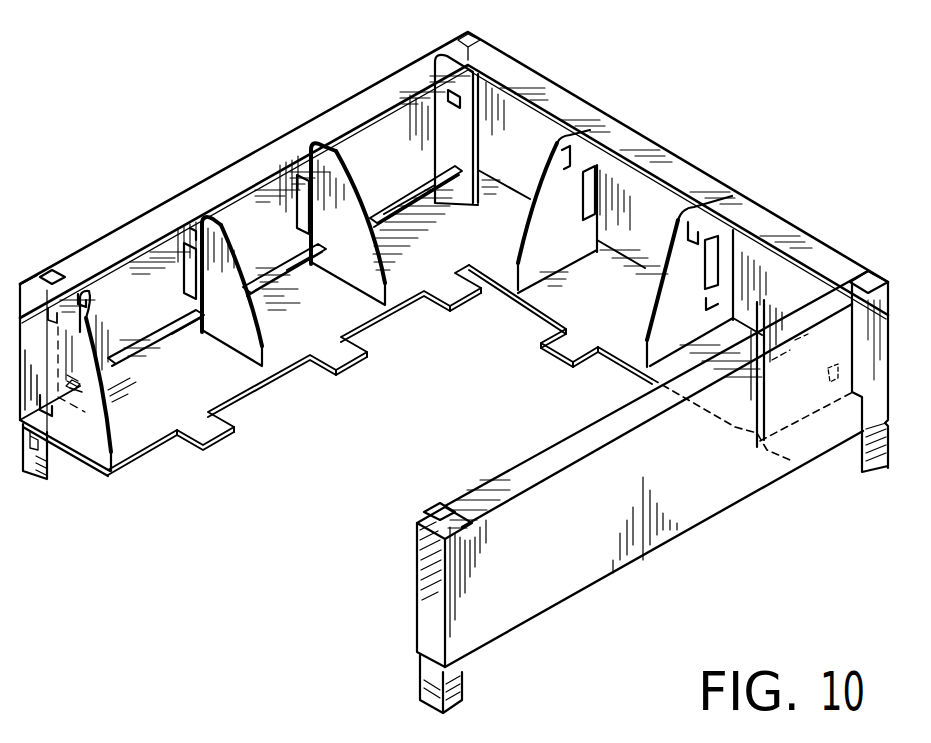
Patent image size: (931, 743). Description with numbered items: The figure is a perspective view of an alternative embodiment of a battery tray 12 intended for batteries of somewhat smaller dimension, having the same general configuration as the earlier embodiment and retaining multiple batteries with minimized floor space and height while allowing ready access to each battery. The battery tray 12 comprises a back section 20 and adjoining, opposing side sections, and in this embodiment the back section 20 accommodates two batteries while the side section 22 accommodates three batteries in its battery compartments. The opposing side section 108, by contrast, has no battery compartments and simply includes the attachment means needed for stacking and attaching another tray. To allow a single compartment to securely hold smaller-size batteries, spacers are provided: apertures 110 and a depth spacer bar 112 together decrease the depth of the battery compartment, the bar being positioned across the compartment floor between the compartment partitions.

The battery tray 12 is at (760, 206).
The back section 20 is at (584, 377).
The side section 22 is at (380, 362).
The opposing side section 108 is at (416, 582).
The apertures 110 is at (200, 328).
The depth spacer bar 112 is at (140, 358).